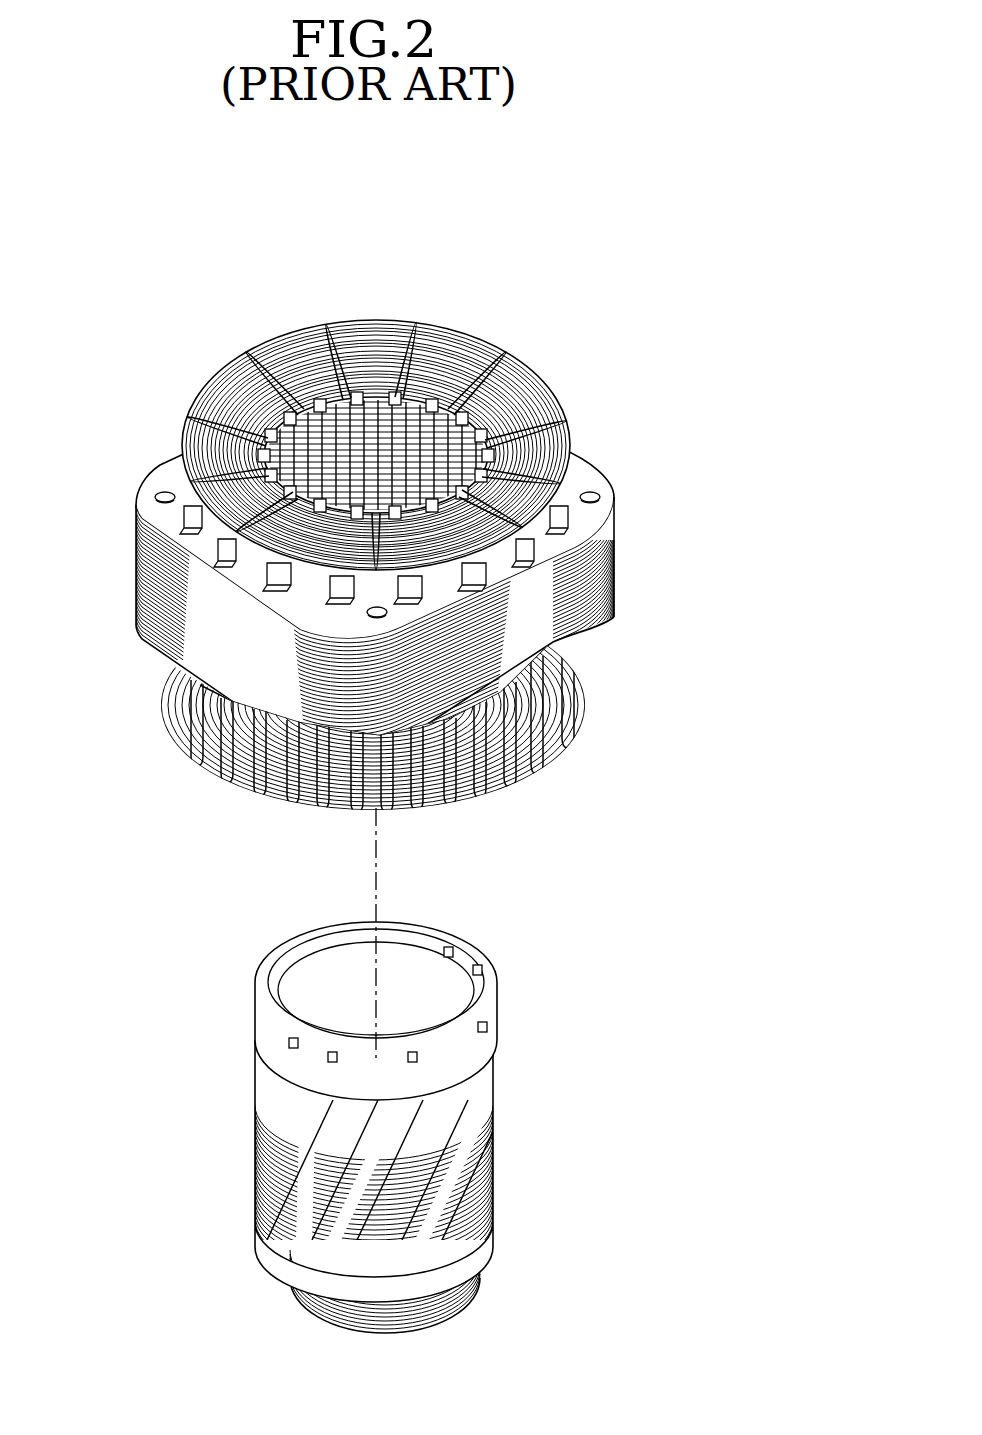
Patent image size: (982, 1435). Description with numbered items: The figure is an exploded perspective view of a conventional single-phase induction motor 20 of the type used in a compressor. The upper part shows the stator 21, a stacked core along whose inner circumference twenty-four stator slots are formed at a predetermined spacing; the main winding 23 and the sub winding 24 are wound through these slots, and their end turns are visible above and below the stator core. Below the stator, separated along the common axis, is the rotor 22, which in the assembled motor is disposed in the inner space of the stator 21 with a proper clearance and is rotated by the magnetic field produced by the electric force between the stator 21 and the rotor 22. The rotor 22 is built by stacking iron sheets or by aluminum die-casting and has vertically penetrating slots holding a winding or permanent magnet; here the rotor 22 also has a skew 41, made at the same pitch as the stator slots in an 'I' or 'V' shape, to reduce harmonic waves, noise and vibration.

The stator 20 is at (133, 326).
The stator 21 is at (613, 560).
The rotor 22 is at (495, 1105).
The main winding 23 is at (425, 323).
The sub winding 24 is at (373, 706).
The skew 41 is at (495, 1177).